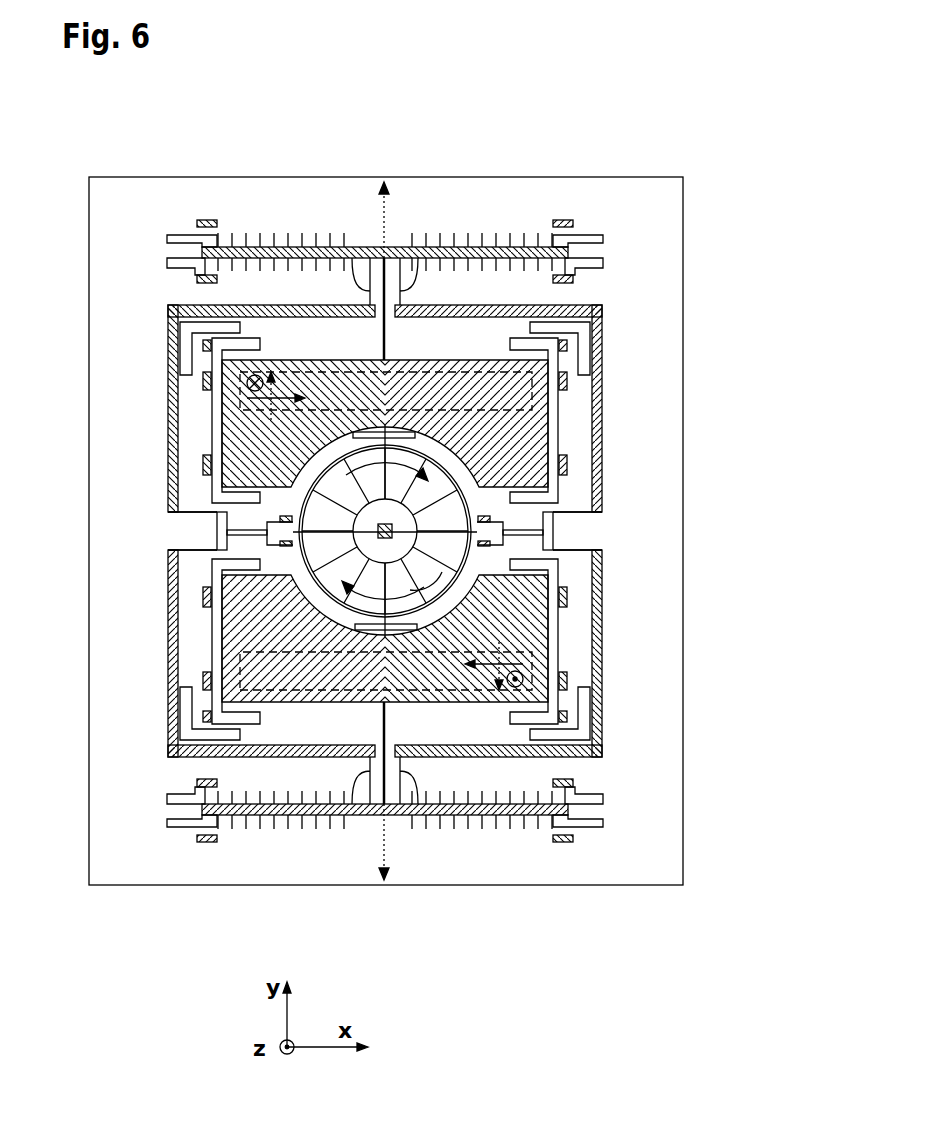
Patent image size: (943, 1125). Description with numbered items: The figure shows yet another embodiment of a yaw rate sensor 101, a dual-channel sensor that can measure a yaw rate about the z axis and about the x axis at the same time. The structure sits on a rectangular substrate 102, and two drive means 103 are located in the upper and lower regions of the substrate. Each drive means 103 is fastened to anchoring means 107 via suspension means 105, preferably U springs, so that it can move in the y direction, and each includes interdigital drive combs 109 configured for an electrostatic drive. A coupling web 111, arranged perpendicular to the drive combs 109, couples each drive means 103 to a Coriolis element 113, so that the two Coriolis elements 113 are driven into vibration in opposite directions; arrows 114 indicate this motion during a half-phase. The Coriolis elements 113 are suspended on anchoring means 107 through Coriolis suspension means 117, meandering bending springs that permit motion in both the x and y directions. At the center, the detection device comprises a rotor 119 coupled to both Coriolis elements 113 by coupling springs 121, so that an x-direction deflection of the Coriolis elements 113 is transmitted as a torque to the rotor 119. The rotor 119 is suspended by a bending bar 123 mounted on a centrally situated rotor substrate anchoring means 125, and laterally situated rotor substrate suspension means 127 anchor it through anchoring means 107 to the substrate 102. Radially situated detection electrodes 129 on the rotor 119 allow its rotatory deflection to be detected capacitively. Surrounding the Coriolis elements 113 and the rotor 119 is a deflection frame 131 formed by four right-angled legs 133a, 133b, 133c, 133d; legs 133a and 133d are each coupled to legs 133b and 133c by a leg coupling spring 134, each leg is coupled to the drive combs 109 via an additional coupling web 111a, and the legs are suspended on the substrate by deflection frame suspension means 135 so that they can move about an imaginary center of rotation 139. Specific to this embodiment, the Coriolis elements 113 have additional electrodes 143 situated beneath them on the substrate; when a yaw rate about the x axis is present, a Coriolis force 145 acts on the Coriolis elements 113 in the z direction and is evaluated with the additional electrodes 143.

The yaw rate sensor 101 is at (692, 130).
The substrate 102 is at (683, 188).
The drive means 103 is at (165, 262).
The suspension means 105 is at (180, 237).
The anchoring means 107 is at (200, 220).
The drive combs 109 is at (262, 233).
The coupling web 111 is at (390, 300).
The additional coupling web 111a is at (362, 288).
The Coriolis element 113 is at (288, 360).
The arrows 114 is at (377, 533).
The Coriolis suspension means 117 is at (212, 345).
The rotor 119 is at (267, 525).
The coupling spring 121 is at (473, 360).
The bending bar 123 is at (417, 533).
The rotor substrate anchoring means 125 is at (217, 548).
The rotor substrate suspension means 127 is at (470, 518).
The detection electrodes 129 is at (420, 580).
The deflection frame 131 is at (247, 390).
The leg 133a is at (603, 405).
The leg 133b is at (548, 630).
The leg 133c is at (222, 630).
The leg 133d is at (222, 440).
The leg coupling spring 134 is at (230, 537).
The deflection frame suspension means 135 is at (182, 327).
The imaginary center of rotation 139 is at (170, 308).
The additional electrodes 143 is at (420, 395).
The Coriolis force 145 is at (247, 360).